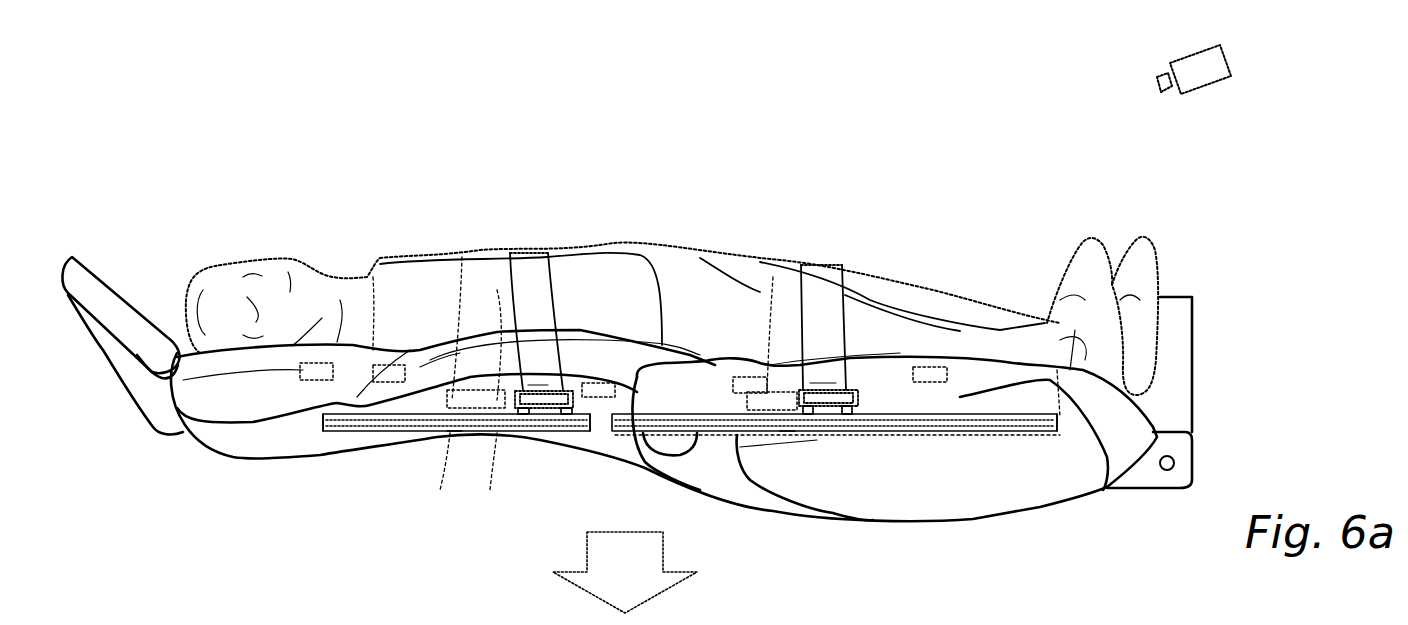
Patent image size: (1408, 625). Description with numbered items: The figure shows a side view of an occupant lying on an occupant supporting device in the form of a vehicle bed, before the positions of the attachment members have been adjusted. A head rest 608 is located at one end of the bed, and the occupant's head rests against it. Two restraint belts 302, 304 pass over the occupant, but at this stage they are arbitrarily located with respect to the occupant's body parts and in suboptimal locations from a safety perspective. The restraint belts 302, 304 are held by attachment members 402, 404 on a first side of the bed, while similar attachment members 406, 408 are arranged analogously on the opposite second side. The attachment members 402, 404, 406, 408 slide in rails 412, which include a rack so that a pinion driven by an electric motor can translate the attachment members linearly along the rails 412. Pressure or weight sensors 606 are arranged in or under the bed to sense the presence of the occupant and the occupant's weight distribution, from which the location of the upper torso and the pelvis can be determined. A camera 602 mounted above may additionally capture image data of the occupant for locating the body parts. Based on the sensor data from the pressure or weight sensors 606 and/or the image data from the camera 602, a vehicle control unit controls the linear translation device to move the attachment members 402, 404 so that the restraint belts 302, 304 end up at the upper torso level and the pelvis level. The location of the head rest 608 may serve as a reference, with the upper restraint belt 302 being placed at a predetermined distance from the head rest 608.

The restraint belt 302 is at (528, 262).
The restraint belt 304 is at (802, 262).
The attachment member 402 is at (552, 432).
The attachment member 404 is at (830, 432).
The attachment member 406 is at (455, 432).
The attachment member 408 is at (788, 418).
The rail 412 is at (403, 432).
The camera 602 is at (1212, 72).
The pressure or weight sensor 606 is at (303, 382).
The head rest 608 is at (112, 298).